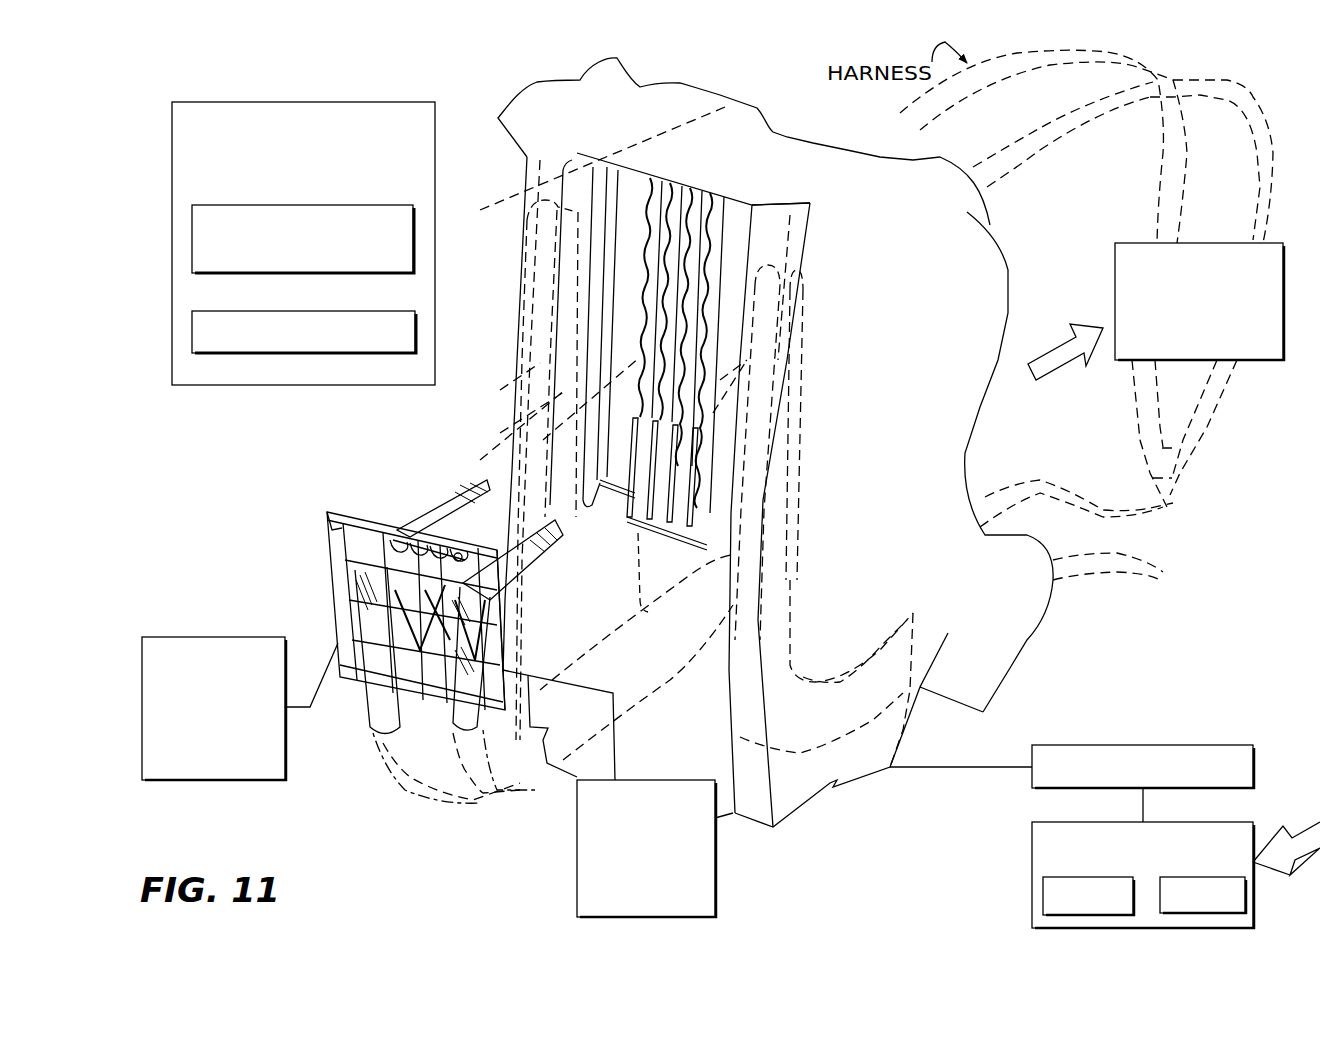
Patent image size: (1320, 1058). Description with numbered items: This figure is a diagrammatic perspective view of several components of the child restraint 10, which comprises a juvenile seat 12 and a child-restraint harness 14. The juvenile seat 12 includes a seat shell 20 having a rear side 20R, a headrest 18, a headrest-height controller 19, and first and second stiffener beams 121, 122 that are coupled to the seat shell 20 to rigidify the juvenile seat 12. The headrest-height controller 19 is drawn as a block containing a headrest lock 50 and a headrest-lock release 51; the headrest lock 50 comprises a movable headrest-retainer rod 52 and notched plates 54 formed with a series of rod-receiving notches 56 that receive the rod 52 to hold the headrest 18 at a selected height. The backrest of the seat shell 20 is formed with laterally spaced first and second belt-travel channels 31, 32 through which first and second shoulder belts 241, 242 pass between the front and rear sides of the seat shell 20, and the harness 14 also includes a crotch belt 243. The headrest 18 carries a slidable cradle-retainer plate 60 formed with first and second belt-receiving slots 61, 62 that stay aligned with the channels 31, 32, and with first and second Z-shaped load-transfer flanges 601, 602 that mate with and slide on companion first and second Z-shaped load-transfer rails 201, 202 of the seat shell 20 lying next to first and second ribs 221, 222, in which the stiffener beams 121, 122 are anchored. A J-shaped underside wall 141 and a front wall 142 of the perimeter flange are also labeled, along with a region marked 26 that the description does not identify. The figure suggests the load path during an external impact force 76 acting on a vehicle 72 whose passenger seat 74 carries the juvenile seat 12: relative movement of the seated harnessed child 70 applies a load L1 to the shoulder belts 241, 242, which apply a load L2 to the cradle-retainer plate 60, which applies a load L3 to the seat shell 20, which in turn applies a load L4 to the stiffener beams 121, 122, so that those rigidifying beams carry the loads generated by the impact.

The child restraint 10 is at (1276, 115).
The juvenile seat 12 is at (722, 88).
The child-restraint harness 14 is at (461, 474).
The headrest 18 is at (347, 688).
The headrest-height controller 19 is at (313, 101).
The seat shell 20 is at (504, 96).
The rear side of seat shell 20R is at (720, 762).
The seat bottom 26 is at (940, 456).
The first belt-travel channel 31 is at (746, 215).
The second belt-travel channel 32 is at (630, 240).
The headrest lock 50 is at (260, 353).
The headrest-lock release 51 is at (396, 205).
The movable headrest-retainer rod 52 is at (443, 545).
The notched plate 54 is at (705, 473).
The rod-receiving notches 56 is at (642, 390).
The slidable cradle-retainer plate 60 is at (332, 508).
The first shoulder belt-receiving slot 61 is at (508, 560).
The second shoulder belt-receiving slot 62 is at (347, 565).
The seated harnessed child 70 is at (1115, 292).
The vehicle 72 is at (1032, 848).
The passenger seat 74 is at (1092, 745).
The external impact force 76 is at (1305, 836).
The first stiffener beam 121 is at (790, 340).
The second stiffener beam 122 is at (546, 232).
The J-shaped underside wall 141 is at (468, 718).
The front wall 142 is at (388, 722).
The first Z-shaped load-transfer rail 201 is at (765, 230).
The second Z-shaped load-transfer rail 202 is at (608, 196).
The first rib 221 is at (775, 250).
The second rib 222 is at (544, 156).
The first shoulder belt 241 is at (560, 555).
The second shoulder belt 242 is at (444, 502).
The crotch belt 243 is at (1167, 505).
The first Z-shaped load-transfer flange 601 is at (577, 886).
The second Z-shaped load-transfer flange 602 is at (226, 780).
The load L1 is at (1168, 155).
The load L2 is at (332, 592).
The load L3 is at (223, 600).
The load L4 is at (500, 385).